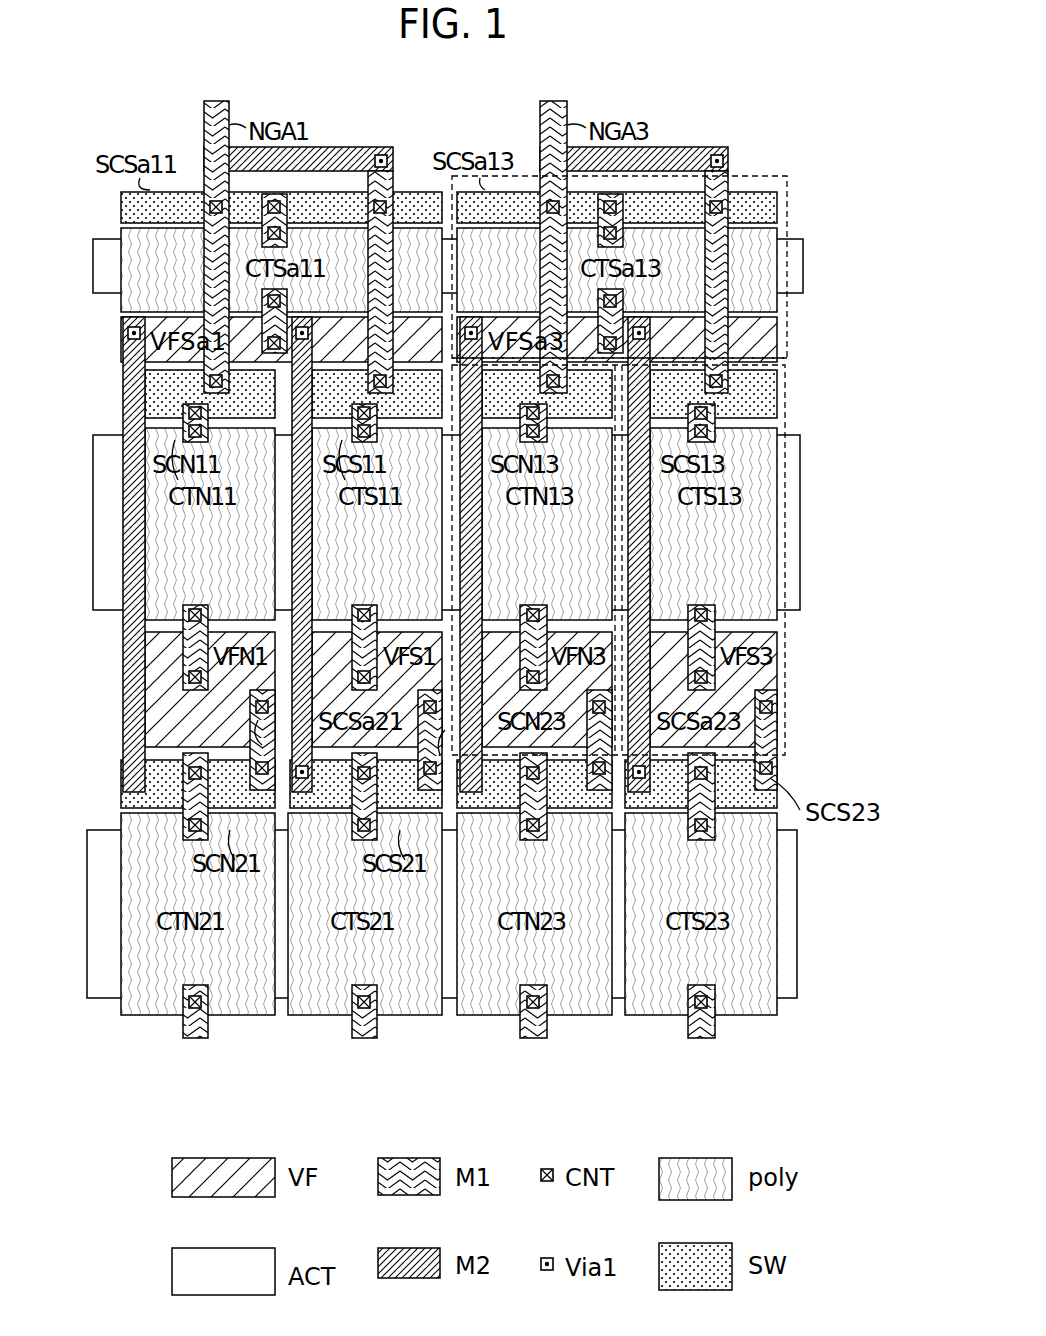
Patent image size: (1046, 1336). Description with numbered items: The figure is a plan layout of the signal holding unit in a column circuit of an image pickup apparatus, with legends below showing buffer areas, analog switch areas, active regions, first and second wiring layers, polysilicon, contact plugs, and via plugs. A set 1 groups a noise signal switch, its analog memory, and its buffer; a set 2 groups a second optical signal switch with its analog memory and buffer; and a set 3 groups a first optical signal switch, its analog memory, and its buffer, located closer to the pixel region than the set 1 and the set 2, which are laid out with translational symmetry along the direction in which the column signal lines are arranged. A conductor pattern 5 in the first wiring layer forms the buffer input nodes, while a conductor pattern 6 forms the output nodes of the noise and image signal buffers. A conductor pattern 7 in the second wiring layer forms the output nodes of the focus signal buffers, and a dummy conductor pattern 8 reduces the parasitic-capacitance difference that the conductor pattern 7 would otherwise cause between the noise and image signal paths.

The set 1 is at (650, 350).
The set 2 is at (790, 378).
The set 3 is at (790, 180).
The conductor pattern 5 is at (270, 325).
The conductor pattern 6 is at (420, 735).
The conductor pattern 7 is at (300, 540).
The conductor pattern 8 is at (130, 428).